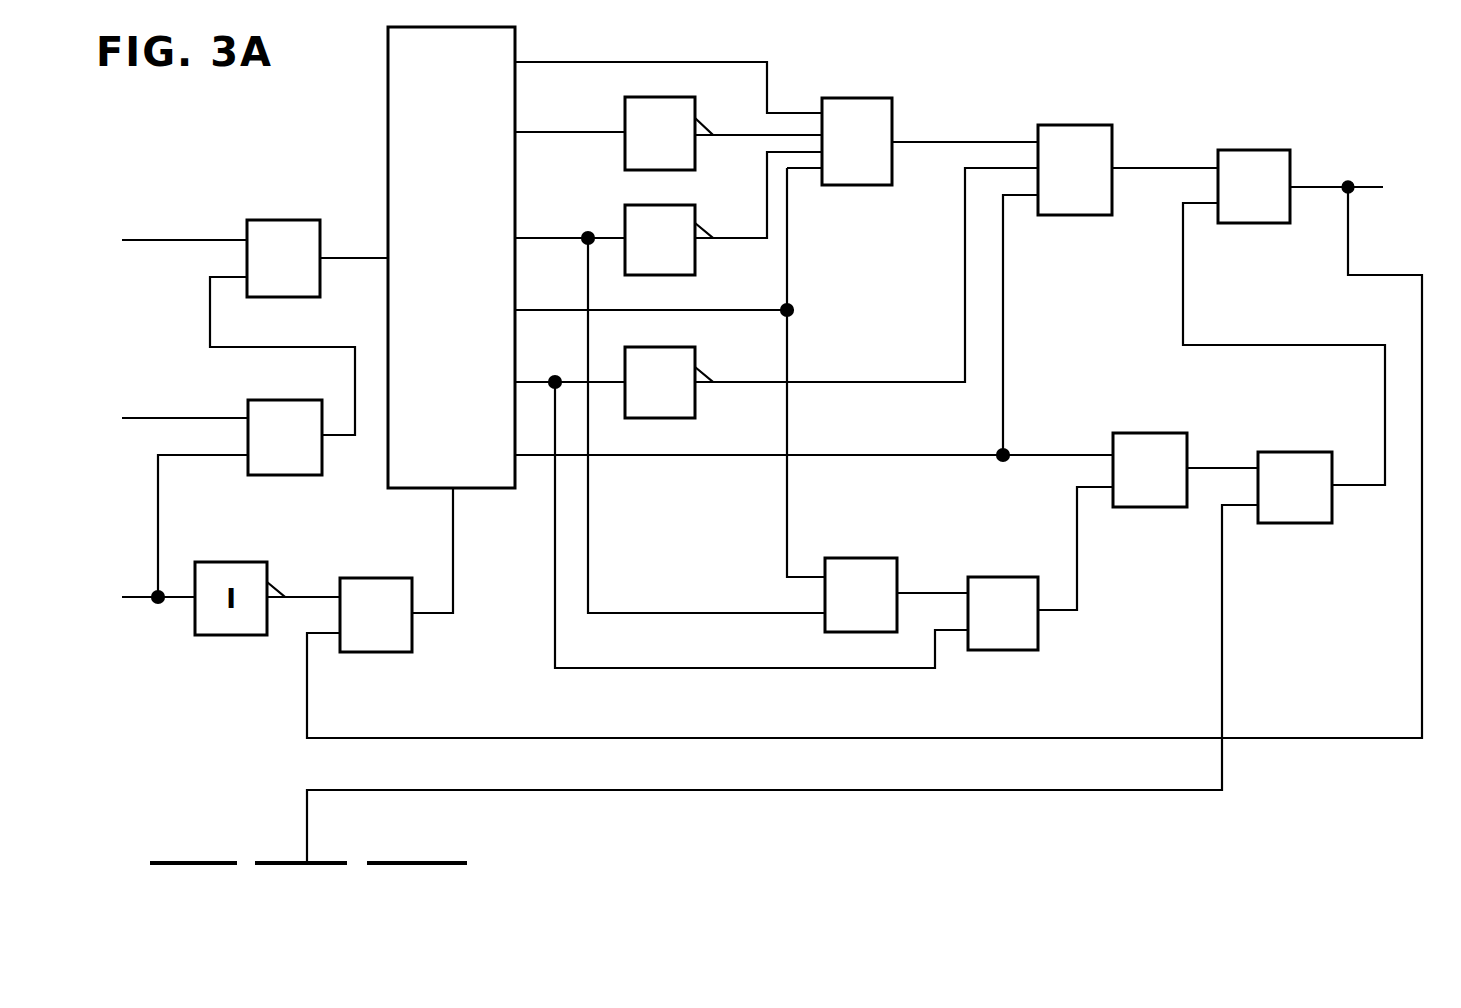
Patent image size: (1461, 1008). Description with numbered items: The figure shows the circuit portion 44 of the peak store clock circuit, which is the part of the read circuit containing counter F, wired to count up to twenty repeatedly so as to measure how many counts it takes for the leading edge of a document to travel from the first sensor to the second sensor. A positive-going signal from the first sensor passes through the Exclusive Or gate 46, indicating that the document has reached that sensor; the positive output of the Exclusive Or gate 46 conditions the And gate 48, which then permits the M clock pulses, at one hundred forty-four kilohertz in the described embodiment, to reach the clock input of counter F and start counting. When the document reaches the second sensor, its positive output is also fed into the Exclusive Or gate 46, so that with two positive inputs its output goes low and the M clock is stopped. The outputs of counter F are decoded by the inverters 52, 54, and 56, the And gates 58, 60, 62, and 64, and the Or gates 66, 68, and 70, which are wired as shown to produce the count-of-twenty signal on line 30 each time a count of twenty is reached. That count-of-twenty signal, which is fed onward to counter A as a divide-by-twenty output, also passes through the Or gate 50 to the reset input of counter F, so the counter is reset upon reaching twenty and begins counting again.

The circuit portion 44 is at (1003, 80).
The conductor or line 30 is at (1313, 185).
The Exclusive Or gate 46 is at (283, 407).
The And gate 48 is at (280, 230).
The Or gate 50 is at (377, 585).
The inverter 52 is at (632, 110).
The inverter 54 is at (632, 213).
The inverter 56 is at (687, 400).
The And gate 58 is at (882, 112).
The And gate 60 is at (990, 585).
The And gate 62 is at (1065, 133).
The And gate 64 is at (1290, 455).
The Or gate 66 is at (853, 565).
The Or gate 68 is at (1145, 435).
The Or gate 70 is at (1240, 158).